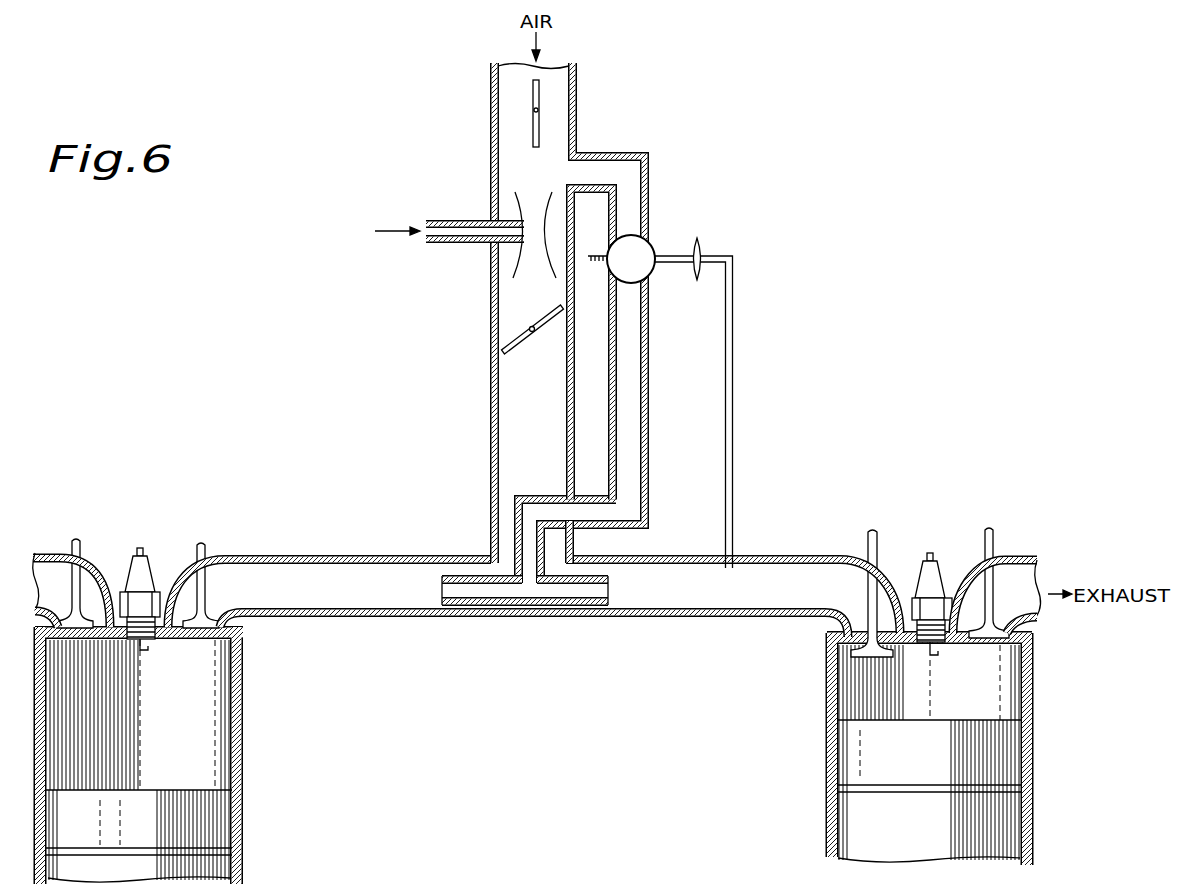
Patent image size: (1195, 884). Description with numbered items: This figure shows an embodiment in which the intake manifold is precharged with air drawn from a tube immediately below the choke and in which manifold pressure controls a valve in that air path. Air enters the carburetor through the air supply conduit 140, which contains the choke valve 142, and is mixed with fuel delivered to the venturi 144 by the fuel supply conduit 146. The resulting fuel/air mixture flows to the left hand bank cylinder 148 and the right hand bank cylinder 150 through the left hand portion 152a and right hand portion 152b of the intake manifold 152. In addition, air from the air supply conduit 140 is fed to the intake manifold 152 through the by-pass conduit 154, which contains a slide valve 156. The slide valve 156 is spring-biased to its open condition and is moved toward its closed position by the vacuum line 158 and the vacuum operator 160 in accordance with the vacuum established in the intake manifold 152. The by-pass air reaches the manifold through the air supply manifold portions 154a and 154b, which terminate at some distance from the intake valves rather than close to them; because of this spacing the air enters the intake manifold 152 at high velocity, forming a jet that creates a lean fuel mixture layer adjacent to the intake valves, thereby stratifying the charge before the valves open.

The air supply conduit 140 is at (492, 127).
The choke valve 142 is at (540, 105).
The venturi 144 is at (515, 265).
The fuel supply conduit 146 is at (452, 221).
The left hand bank cylinder 148 is at (242, 737).
The right hand bank cylinder 150 is at (828, 740).
The intake manifold 152 is at (338, 558).
The left hand portion of the intake manifold 152a is at (323, 618).
The right hand portion of the intake manifold 152b is at (725, 618).
The by-pass conduit 154 is at (648, 427).
The air supply manifold portion 154a is at (463, 588).
The air supply manifold portion 154b is at (588, 595).
The slide valve 156 is at (650, 278).
The vacuum line 158 is at (732, 393).
The vacuum operator 160 is at (700, 247).